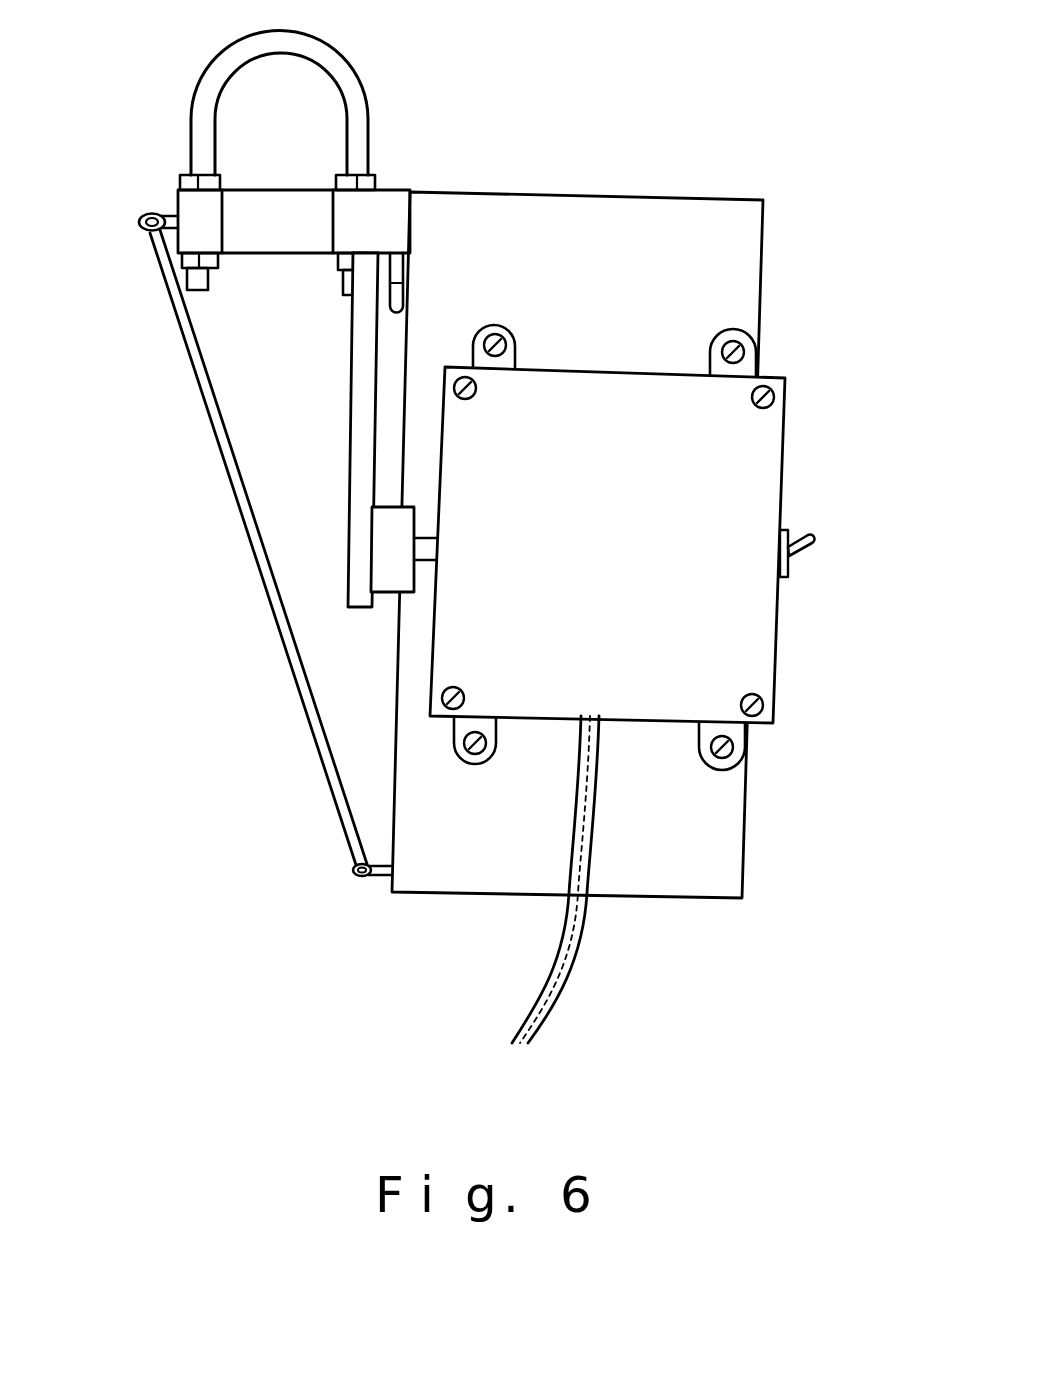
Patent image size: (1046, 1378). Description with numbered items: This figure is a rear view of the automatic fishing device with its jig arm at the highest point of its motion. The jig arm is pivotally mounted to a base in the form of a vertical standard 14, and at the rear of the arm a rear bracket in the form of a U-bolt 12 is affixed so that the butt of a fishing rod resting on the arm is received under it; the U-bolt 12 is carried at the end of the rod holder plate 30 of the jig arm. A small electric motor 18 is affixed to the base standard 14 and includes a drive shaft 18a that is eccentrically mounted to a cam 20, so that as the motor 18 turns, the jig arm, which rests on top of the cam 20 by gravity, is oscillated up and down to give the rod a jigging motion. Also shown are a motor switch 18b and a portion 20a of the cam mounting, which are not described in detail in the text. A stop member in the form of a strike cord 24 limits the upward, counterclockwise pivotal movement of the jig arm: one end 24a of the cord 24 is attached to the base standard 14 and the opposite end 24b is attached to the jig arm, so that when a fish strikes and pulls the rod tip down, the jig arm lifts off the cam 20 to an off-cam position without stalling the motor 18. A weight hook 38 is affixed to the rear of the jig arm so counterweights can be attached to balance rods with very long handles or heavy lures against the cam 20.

The U-bolt 12 is at (378, 104).
The vertical standard 14 is at (743, 810).
The electric motor 18 is at (782, 490).
The drive shaft 18a is at (422, 538).
The switch 18b is at (790, 530).
The cam 20 is at (352, 457).
The support bar block 20a is at (410, 598).
The strike cord 24 is at (203, 387).
The end of strike cord 24a is at (355, 878).
The opposite end of strike cord 24b is at (143, 217).
The plate 30 is at (175, 195).
The weight hook 38 is at (412, 265).